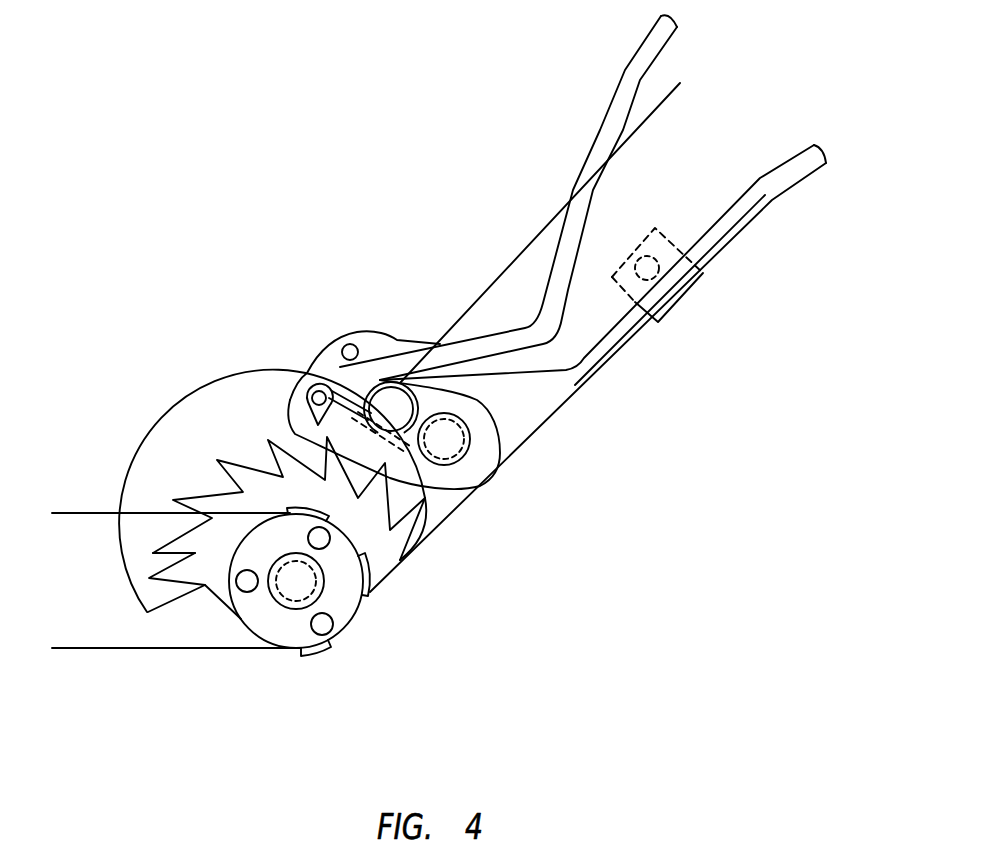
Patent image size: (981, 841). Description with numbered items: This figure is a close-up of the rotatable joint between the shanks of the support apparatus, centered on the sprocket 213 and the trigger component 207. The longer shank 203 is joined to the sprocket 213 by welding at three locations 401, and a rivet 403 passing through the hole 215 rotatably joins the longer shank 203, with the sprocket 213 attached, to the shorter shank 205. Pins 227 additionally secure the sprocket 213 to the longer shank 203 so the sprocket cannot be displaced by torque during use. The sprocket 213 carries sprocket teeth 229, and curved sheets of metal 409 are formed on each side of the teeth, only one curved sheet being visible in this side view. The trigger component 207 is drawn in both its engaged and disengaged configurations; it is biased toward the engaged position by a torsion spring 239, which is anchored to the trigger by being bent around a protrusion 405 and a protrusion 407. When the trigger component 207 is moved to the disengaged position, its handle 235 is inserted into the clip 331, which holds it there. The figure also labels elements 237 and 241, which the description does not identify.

The longer shank 203 is at (102, 628).
The shorter shank 205 is at (680, 173).
The trigger component 207 is at (393, 327).
The sprocket 213 is at (437, 550).
The hole 215 is at (291, 590).
The pins 227 is at (246, 593).
The sprocket teeth 229 is at (179, 541).
The handle 235 is at (808, 163).
The pivot plate 237 is at (310, 370).
The torsion spring 239 is at (331, 388).
The pivot hole 241 is at (470, 407).
The clip 331 is at (660, 287).
The welding locations 401 is at (320, 657).
The rivet 403 is at (313, 598).
The protrusion 405 is at (307, 389).
The protrusion 407 is at (393, 420).
The curved sheets of metal 409 is at (203, 479).